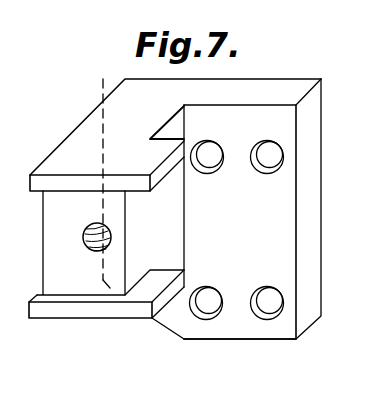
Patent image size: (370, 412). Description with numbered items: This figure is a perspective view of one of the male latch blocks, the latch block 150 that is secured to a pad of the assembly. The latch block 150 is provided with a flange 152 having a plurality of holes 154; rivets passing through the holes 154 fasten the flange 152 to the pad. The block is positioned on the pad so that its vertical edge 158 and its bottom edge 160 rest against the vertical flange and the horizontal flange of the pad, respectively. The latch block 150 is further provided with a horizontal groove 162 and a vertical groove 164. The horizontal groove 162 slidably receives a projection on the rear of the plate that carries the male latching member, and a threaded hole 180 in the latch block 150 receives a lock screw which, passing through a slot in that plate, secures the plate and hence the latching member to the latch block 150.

The latch block 150 is at (252, 92).
The flange 152 is at (293, 147).
The holes 154 is at (219, 169).
The vertical edge 158 is at (316, 246).
The bottom edge 160 is at (238, 341).
The horizontal groove 162 is at (43, 298).
The vertical groove 164 is at (176, 119).
The threaded hole 180 is at (83, 237).